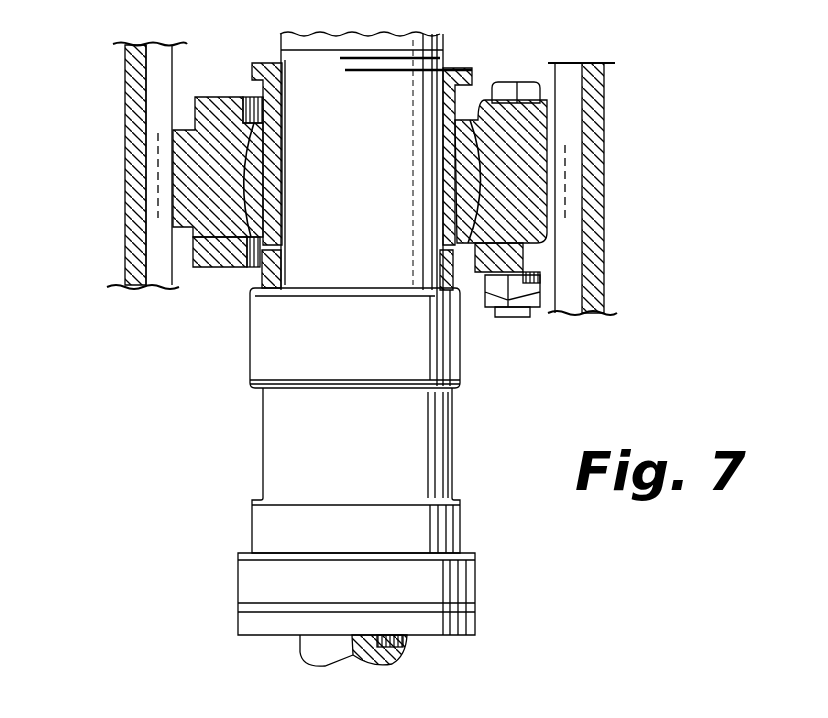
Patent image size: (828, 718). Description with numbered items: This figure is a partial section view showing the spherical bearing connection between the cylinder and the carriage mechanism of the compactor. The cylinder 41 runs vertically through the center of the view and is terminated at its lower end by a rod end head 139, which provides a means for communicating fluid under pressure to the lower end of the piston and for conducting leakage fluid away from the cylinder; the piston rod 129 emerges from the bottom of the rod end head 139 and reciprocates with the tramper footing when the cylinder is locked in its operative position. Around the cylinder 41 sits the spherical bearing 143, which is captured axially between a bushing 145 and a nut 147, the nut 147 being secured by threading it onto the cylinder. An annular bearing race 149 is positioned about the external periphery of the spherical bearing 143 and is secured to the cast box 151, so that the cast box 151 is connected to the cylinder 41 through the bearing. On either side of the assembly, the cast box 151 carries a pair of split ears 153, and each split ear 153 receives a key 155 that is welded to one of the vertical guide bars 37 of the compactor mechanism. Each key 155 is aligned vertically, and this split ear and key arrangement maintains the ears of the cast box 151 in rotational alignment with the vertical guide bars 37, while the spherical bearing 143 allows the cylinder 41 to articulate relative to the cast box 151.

The vertical guide bars 37 is at (124, 247).
The cylinder 41 is at (368, 146).
The piston rod 129 is at (408, 652).
The rod end head 139 is at (392, 358).
The spherical bearing 143 is at (257, 268).
The bushing 145 is at (474, 285).
The nut 147 is at (474, 80).
The annular bearing race 149 is at (244, 100).
The cast box 151 is at (195, 98).
The split ears 153 is at (122, 135).
The key 155 is at (165, 290).